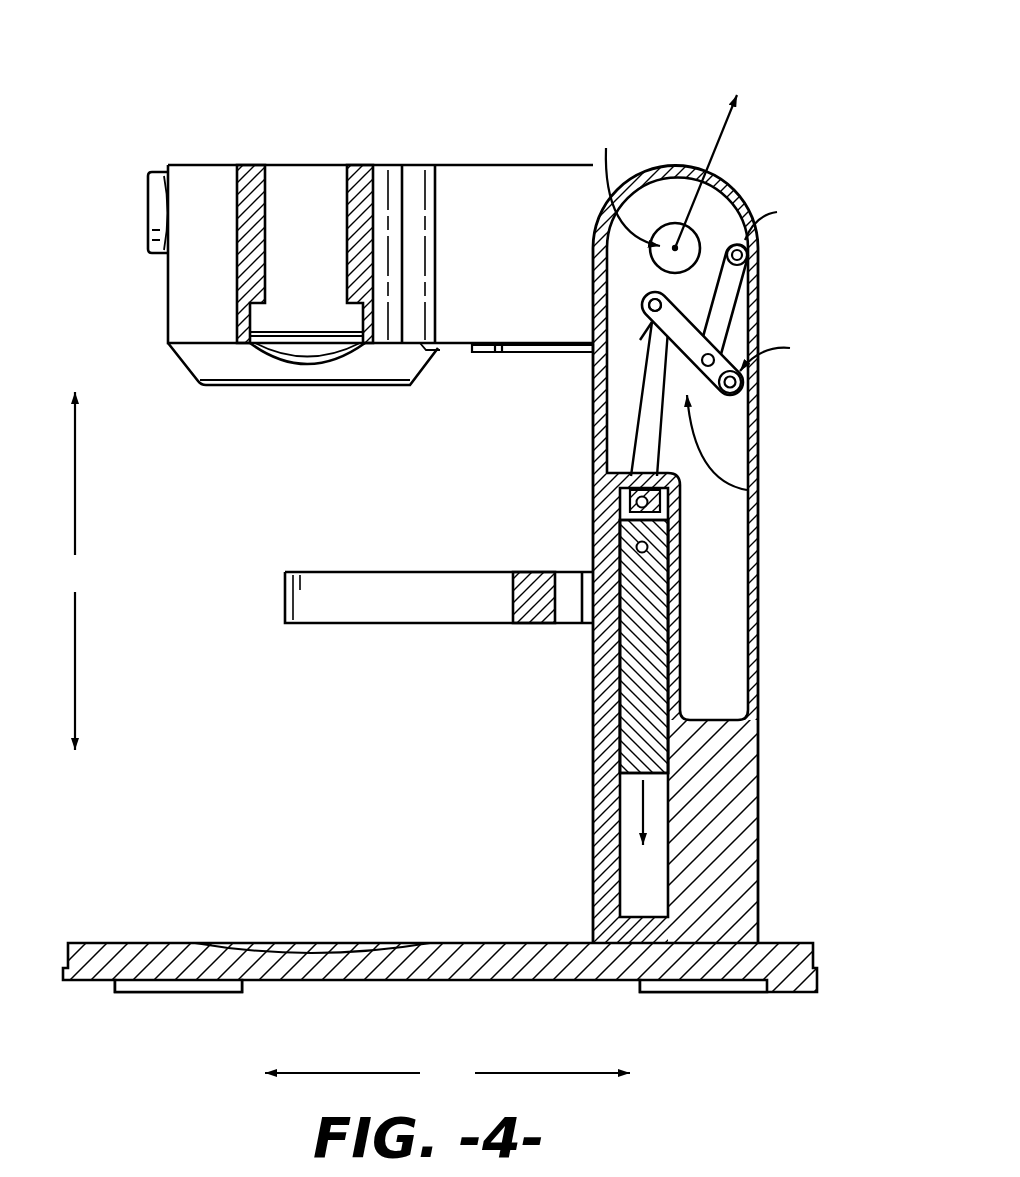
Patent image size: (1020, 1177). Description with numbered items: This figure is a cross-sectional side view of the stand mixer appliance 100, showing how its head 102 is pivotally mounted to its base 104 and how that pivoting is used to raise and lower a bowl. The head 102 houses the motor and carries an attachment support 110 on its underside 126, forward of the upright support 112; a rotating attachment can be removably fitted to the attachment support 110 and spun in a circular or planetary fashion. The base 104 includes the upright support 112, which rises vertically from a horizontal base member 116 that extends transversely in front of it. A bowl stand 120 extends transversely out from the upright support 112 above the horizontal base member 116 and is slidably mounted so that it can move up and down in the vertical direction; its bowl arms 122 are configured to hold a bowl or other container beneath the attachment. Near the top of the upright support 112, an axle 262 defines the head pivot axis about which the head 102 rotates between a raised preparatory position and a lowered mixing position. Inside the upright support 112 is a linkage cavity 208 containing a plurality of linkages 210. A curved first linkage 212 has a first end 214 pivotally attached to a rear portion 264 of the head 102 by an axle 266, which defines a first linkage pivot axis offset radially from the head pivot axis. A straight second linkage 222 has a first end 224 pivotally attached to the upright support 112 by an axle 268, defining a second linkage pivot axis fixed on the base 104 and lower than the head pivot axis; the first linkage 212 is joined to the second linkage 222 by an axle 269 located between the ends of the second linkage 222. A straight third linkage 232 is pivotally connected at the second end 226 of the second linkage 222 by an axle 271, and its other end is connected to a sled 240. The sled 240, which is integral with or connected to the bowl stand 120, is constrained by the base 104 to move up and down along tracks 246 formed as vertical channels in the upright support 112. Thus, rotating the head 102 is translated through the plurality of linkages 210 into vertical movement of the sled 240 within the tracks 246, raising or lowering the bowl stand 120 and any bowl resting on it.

The stand mixer appliance 100 is at (160, 86).
The head 102 is at (495, 192).
The base 104 is at (684, 503).
The attachment support 110 is at (205, 360).
The upright support 112 is at (737, 800).
The horizontal base member 116 is at (395, 968).
The bowl stand 120 is at (568, 582).
The bowl arms 122 is at (355, 595).
The underside 126 is at (482, 360).
The linkage cavity 208 is at (708, 557).
The plurality of linkages 210 is at (747, 490).
The first linkage 212 is at (718, 288).
The first end 214 is at (727, 232).
The second linkage 222 is at (643, 335).
The first end 224 is at (735, 402).
The second end 226 is at (644, 290).
The third linkage 232 is at (648, 428).
The sled 240 is at (648, 643).
The tracks 246 is at (655, 875).
The axle 262 is at (670, 223).
The rear portion 264 is at (710, 206).
The axle 266 is at (748, 262).
The axle 268 is at (755, 387).
The axle 269 is at (705, 370).
The axle 271 is at (645, 300).